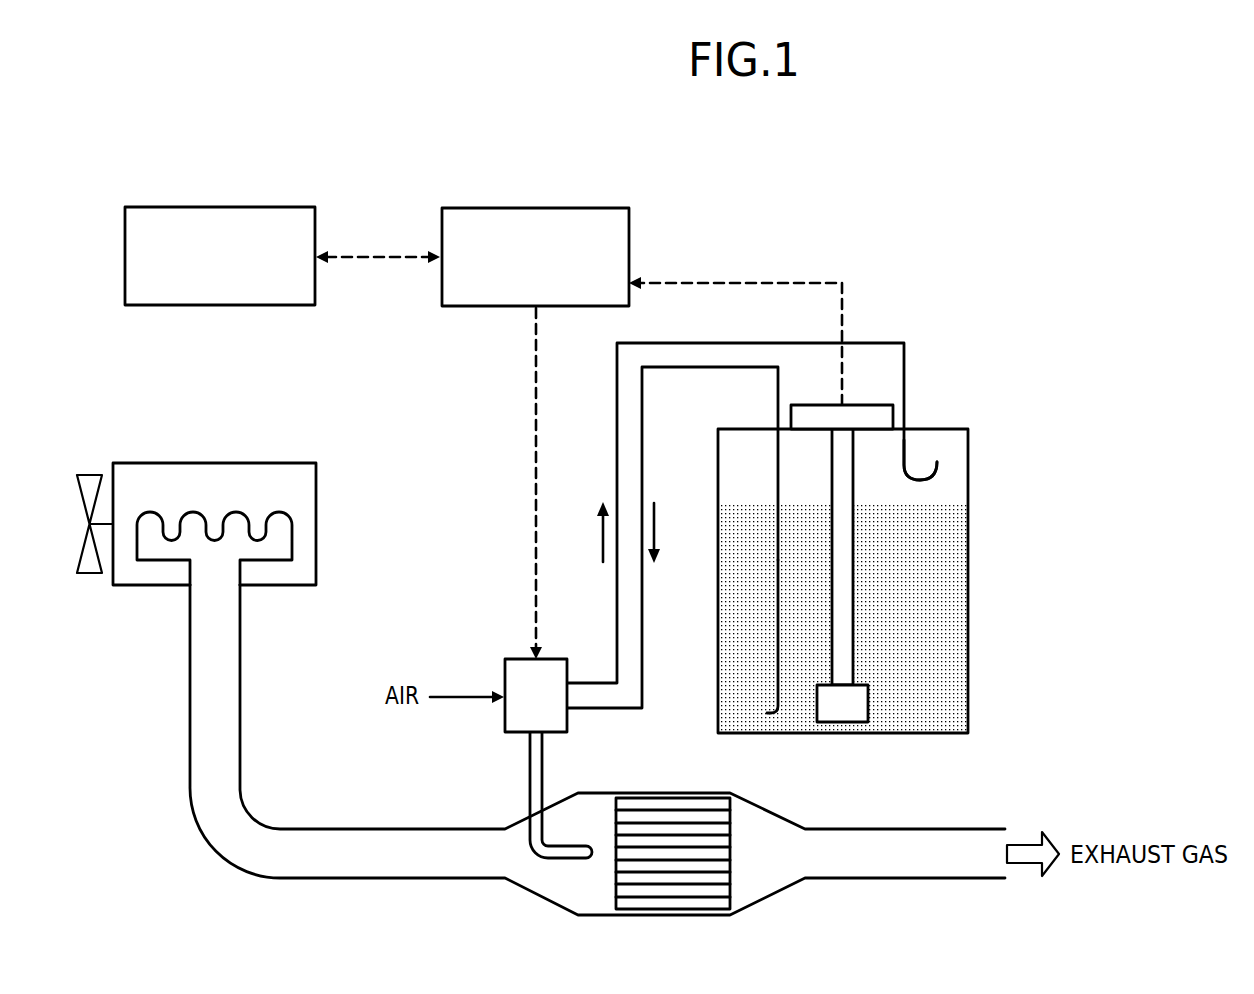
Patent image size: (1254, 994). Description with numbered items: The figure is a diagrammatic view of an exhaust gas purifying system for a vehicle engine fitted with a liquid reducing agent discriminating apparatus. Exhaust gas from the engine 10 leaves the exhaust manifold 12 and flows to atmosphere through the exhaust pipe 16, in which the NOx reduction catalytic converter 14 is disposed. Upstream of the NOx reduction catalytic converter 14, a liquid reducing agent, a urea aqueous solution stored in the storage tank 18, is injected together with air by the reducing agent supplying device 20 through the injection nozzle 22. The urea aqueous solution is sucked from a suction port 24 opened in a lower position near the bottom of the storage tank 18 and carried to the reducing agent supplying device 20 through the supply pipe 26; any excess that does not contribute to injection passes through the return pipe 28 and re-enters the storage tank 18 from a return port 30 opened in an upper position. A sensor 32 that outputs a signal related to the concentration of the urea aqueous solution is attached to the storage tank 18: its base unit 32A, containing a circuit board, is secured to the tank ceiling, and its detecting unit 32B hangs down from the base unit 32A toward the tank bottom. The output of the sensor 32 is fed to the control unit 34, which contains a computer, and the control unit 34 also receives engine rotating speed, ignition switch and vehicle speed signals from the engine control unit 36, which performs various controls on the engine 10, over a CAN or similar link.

The engine 10 is at (232, 463).
The exhaust manifold 12 is at (292, 536).
The NOx reduction catalytic converter 14 is at (732, 839).
The exhaust pipe 16 is at (315, 829).
The storage tank 18 is at (968, 593).
The reducing agent supplying device 20 is at (504, 672).
The injection nozzle 22 is at (567, 843).
The suction port 24 is at (770, 712).
The supply pipe 26 is at (644, 488).
The return pipe 28 is at (615, 452).
The return port 30 is at (937, 462).
The sensor 32 is at (861, 396).
The base unit 32A is at (883, 417).
The detecting unit 32B is at (846, 723).
The control unit 34 is at (586, 203).
The engine control unit 36 is at (268, 207).